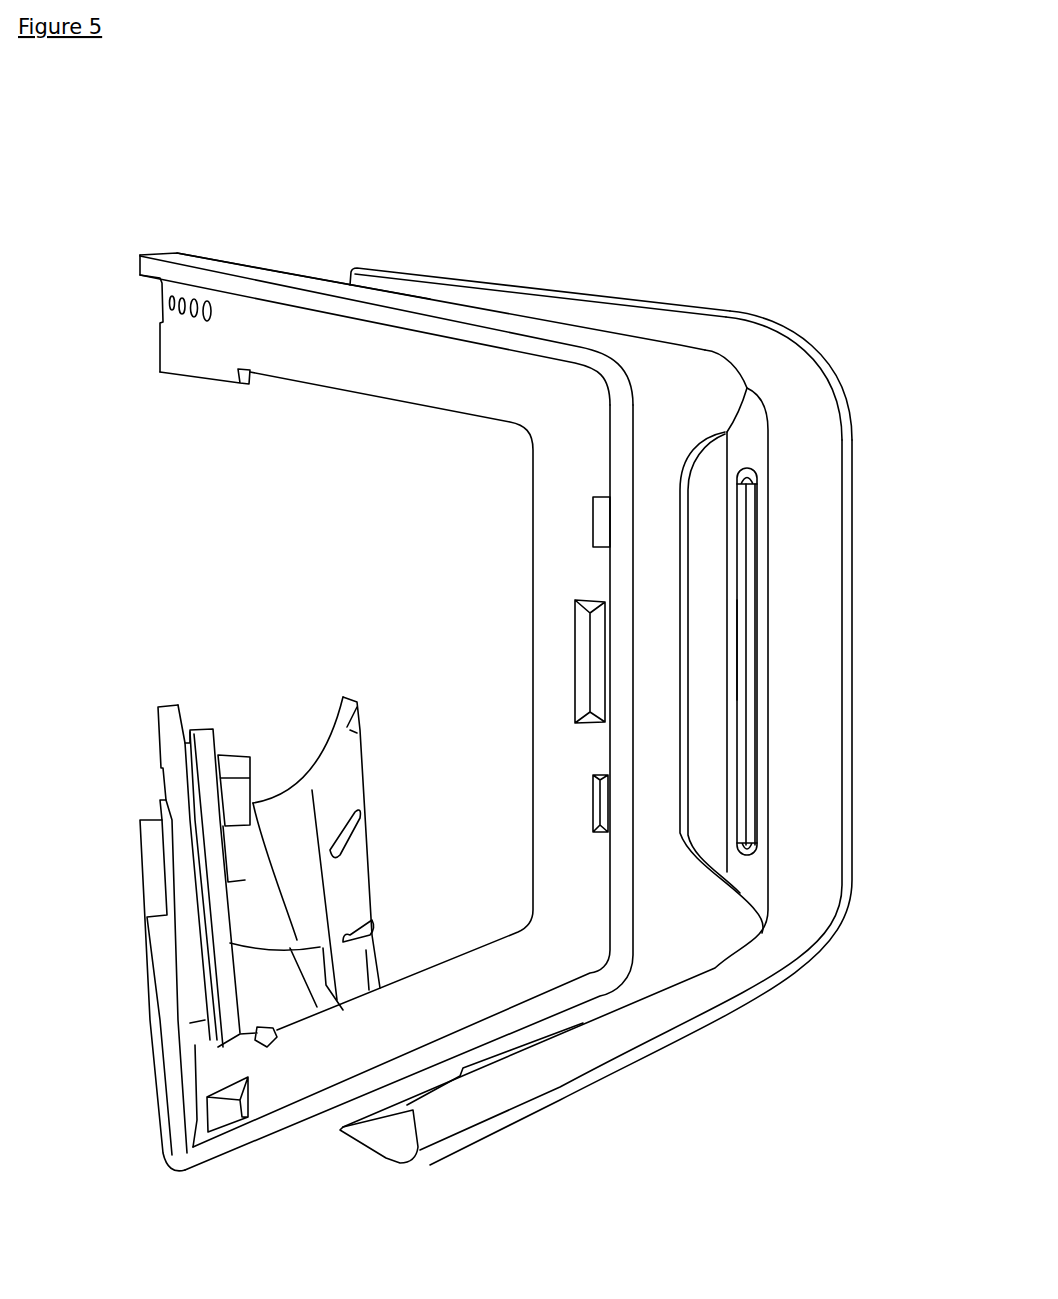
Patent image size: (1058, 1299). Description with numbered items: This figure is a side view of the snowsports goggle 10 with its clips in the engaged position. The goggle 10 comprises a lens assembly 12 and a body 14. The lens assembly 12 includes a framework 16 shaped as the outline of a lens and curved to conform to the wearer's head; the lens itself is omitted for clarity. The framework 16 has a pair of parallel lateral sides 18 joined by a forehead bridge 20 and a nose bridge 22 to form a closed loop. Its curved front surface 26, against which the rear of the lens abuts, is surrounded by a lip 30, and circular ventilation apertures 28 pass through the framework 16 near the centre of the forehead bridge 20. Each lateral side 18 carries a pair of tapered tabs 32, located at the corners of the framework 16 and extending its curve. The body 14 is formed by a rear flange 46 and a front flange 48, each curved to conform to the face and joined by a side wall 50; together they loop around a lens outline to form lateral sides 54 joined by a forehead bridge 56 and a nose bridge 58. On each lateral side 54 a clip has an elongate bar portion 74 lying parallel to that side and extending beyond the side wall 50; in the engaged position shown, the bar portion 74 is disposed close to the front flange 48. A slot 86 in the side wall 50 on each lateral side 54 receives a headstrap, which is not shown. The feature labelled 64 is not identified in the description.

The goggle 10 is at (332, 188).
The lens assembly 12 is at (155, 251).
The body 14 is at (769, 322).
The framework 16 is at (197, 250).
The lateral sides 18 is at (527, 646).
The forehead bridge 20 is at (186, 382).
The nose bridge 22 is at (157, 706).
The front surface 26 is at (383, 374).
The apertures 28 is at (210, 308).
The lip 30 is at (300, 300).
The tabs 32 is at (718, 398).
The rear flange 46 is at (356, 690).
The front flange 48 is at (208, 729).
The side wall 50 is at (268, 798).
The lateral sides 54 is at (823, 660).
The forehead bridge 56 is at (462, 276).
The nose bridge 58 is at (371, 868).
The plate 64 is at (730, 455).
The bar portion 74 is at (707, 535).
The slot 86 is at (752, 754).